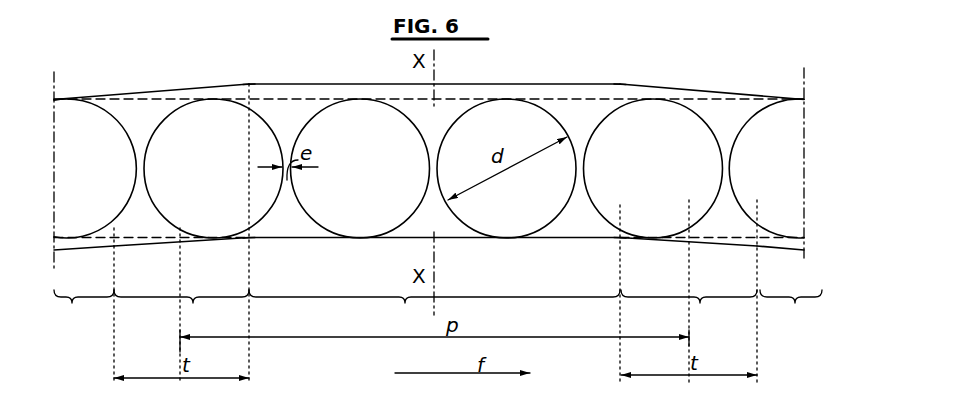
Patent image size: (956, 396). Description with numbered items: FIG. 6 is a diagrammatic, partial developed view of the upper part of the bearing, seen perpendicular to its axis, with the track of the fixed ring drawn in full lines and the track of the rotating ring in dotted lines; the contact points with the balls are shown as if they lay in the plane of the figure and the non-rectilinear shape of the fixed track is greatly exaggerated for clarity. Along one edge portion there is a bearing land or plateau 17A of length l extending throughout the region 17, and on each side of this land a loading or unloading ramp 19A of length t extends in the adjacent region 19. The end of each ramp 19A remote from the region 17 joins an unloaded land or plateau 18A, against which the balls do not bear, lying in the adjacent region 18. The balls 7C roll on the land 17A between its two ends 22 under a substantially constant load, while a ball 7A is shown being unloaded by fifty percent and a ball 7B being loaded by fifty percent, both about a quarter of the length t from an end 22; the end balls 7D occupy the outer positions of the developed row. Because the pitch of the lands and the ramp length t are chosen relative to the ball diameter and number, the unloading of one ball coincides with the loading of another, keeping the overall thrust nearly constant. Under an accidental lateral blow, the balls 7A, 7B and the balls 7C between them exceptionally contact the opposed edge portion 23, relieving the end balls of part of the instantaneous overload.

The ball 7A is at (628, 115).
The ball 7B is at (185, 123).
The balls 7C is at (350, 115).
The end roller 7D is at (95, 127).
The region 17 is at (434, 312).
The bearing land 17A is at (492, 230).
The region 18 is at (438, 311).
The unloaded land 18A is at (68, 248).
The region 19 is at (435, 311).
The ramp 19A is at (152, 246).
The end 22 is at (247, 83).
The edge portion 23 is at (463, 83).